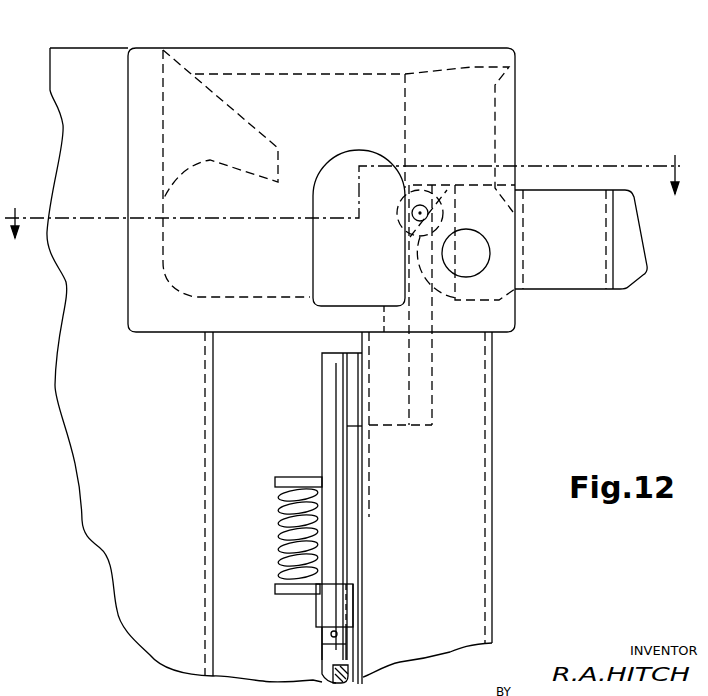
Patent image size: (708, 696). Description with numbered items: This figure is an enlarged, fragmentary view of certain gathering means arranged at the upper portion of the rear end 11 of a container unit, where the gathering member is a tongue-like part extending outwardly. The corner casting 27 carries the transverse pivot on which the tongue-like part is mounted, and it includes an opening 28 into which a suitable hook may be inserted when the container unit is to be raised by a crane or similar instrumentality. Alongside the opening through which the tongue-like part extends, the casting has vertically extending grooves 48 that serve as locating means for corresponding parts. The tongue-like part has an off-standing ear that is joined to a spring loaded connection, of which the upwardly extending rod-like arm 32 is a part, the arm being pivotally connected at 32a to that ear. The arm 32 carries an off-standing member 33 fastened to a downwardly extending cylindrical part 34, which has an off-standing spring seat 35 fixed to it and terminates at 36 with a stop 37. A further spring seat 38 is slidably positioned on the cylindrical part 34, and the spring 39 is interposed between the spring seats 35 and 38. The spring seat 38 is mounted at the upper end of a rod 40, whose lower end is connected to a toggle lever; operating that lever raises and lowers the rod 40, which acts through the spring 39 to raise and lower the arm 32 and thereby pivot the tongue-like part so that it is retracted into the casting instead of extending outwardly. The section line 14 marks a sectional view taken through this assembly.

The rear end of the container 11 is at (492, 447).
The section line 14- 14 is at (347, 217).
The corner casting 27 is at (475, 49).
The opening 28 is at (352, 156).
The upwardly extending arm 32 is at (369, 352).
The pivotal connection 32a is at (419, 200).
The off-standing member 33 is at (402, 428).
The cylindrical part 34 is at (343, 468).
The spring seat 35 is at (297, 476).
The termination of the cylindrical part 36 is at (346, 655).
The stop 37 is at (338, 632).
The spring seat 38 is at (316, 612).
The spring 39 is at (280, 546).
The rod 40 is at (343, 668).
The vertically extending grooves 48 is at (516, 96).